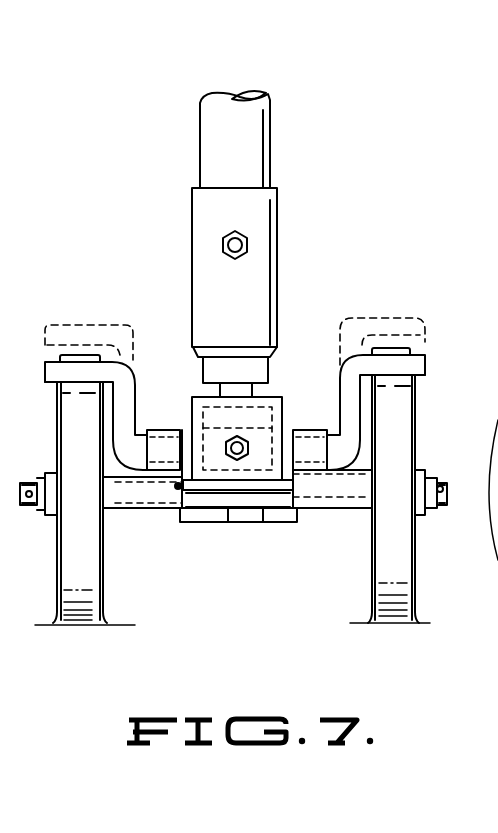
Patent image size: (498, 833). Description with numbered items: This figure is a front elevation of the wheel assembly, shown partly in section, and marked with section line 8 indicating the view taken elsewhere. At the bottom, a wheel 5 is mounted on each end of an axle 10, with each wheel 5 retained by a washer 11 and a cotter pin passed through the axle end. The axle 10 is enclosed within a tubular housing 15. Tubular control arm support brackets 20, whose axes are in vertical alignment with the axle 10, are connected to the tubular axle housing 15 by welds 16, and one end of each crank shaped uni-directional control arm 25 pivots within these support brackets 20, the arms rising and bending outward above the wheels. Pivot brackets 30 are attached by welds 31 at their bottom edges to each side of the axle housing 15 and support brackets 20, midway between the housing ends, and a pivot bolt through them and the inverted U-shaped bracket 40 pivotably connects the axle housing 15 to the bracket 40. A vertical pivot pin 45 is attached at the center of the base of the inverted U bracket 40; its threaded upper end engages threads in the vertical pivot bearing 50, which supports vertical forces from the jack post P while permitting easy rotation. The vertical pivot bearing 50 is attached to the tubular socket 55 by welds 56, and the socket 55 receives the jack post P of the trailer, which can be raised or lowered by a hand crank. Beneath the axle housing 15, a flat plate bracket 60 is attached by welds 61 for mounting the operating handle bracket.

The wheel 5 is at (58, 583).
The section line 8- 8 is at (233, 25).
The axle 10 is at (441, 477).
The washer 11 is at (40, 508).
The tubular housing 15 is at (326, 506).
The welds 16 is at (300, 510).
The tubular control arm support bracket 20 is at (169, 430).
The crank shaped uni-directional control arm 25 is at (48, 364).
The pivot bracket 30 is at (165, 500).
The welds 31 is at (181, 505).
The inverted U-shaped bracket 40 is at (283, 409).
The vertical pivot pin 45 is at (219, 392).
The vertical pivot bearing 50 is at (268, 372).
The tubular socket 55 is at (278, 276).
The welds 56 is at (199, 353).
The bracket 60 is at (228, 514).
The welds 61 is at (265, 512).
The jack post P is at (267, 128).